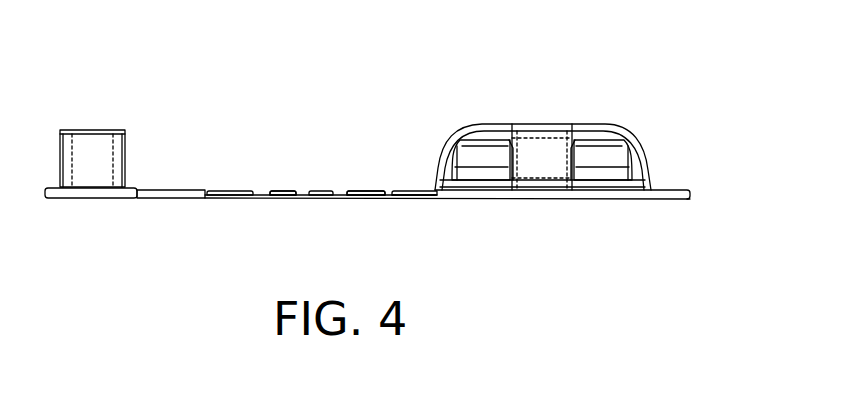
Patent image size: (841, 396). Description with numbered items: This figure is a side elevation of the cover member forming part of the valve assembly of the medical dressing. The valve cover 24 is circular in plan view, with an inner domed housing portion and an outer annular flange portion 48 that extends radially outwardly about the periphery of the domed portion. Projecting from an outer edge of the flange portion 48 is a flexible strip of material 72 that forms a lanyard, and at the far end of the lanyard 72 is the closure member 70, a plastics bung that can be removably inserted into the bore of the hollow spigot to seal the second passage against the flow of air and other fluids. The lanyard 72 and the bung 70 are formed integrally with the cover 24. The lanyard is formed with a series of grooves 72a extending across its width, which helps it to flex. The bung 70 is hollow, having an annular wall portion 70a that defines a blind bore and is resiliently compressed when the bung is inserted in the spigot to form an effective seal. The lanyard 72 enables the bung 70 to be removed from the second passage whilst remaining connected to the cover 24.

The valve cover 24 is at (617, 130).
The outer annular flange portion 48 is at (425, 197).
The closure member 70 is at (133, 119).
The annular wall portion 70a is at (73, 150).
The flexible strip of material 72 is at (207, 193).
The grooves 72a is at (305, 190).